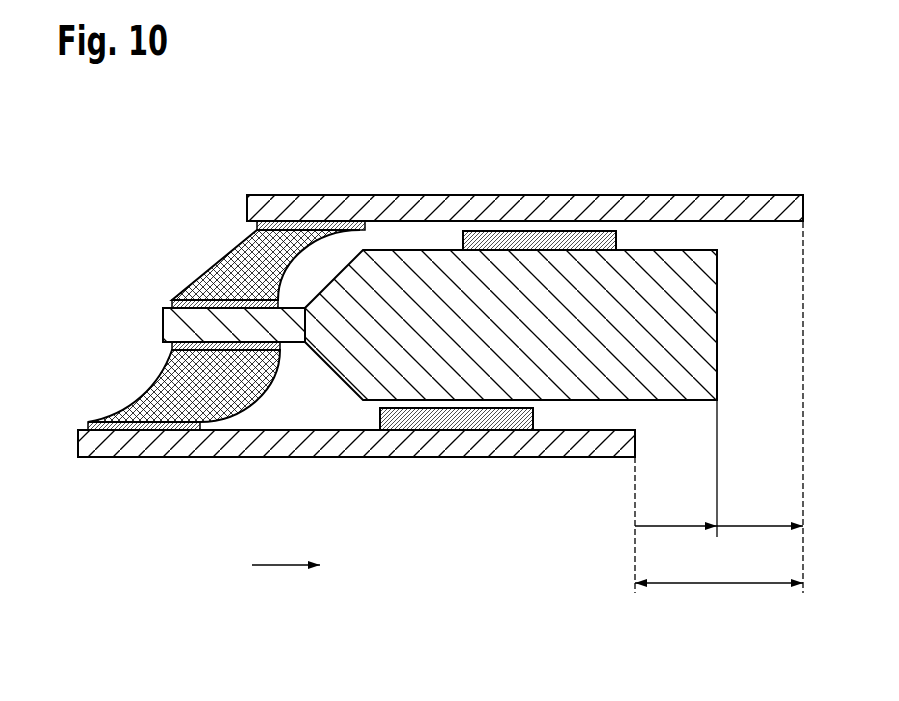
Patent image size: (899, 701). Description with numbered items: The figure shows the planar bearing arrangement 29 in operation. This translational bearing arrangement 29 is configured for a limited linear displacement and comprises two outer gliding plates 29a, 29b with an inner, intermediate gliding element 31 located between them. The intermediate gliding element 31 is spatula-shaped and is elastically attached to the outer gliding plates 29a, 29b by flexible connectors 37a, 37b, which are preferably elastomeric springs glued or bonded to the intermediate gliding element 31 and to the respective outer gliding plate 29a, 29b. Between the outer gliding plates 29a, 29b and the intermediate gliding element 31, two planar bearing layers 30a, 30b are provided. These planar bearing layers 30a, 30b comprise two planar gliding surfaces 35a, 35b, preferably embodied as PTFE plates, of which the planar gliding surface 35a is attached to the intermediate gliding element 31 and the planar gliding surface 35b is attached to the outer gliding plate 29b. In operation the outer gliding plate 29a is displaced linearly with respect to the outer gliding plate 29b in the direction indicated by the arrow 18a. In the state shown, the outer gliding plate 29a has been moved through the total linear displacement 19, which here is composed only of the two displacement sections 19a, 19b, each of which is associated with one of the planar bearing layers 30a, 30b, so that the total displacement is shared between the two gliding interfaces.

The bearing arrangement 29 is at (195, 180).
The outer gliding plate 29a is at (750, 210).
The outer gliding plate 29b is at (585, 450).
The planar bearing layer 30a is at (697, 236).
The planar bearing layer 30b is at (673, 423).
The intermediate gliding element 31 is at (677, 325).
The planar gliding surface 35a is at (543, 238).
The planar gliding surface 35b is at (506, 418).
The flexible connector 37a is at (228, 268).
The flexible connector 37b is at (155, 382).
The total linear displacement 19 is at (747, 585).
The displacement section 19a is at (668, 527).
The displacement section 19b is at (751, 527).
The arrow 18a is at (288, 568).